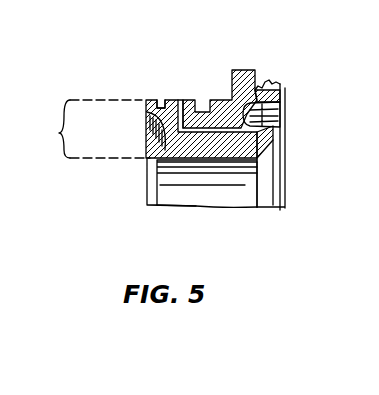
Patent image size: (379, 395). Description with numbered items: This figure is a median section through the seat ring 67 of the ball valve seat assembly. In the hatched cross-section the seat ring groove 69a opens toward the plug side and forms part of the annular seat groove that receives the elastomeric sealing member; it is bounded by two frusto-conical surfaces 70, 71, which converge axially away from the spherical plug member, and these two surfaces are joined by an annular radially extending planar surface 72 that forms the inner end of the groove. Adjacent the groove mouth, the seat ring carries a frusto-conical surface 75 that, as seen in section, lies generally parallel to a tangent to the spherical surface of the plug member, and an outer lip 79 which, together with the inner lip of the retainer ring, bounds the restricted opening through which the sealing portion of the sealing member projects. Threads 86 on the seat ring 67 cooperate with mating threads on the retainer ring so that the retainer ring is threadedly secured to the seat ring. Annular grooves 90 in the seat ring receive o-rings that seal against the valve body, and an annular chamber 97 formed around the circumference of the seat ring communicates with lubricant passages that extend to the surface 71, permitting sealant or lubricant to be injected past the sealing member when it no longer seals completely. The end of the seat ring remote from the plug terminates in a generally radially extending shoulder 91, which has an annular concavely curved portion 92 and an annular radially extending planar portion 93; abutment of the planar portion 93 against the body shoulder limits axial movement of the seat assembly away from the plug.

The seat ring 67 is at (172, 158).
The seat ring groove 69a is at (286, 89).
The frusto-conical surface 70 is at (279, 120).
The frusto-conical surface 71 is at (275, 137).
The annular radially extending planar surface 72 is at (239, 99).
The frusto-conical surface 75 is at (268, 203).
The outer lip 79 is at (270, 148).
The threads 86 is at (283, 87).
The annular grooves 90 is at (164, 100).
The shoulder 91 is at (95, 129).
The annular concavely curved portion 92 is at (148, 150).
The annular radially extending planar portion 93 is at (146, 120).
The annular chamber 97 is at (182, 100).